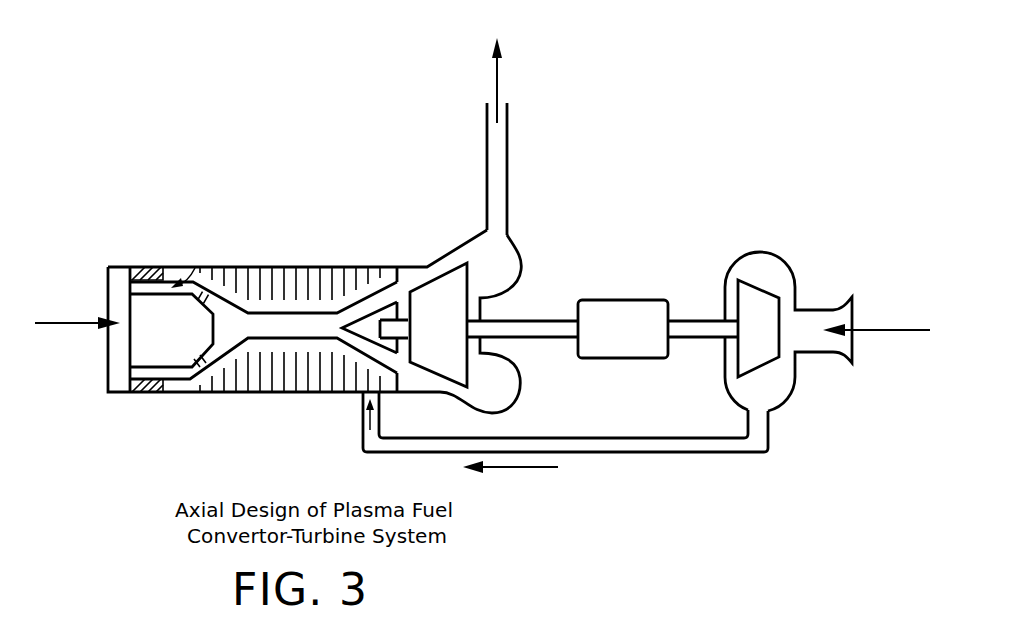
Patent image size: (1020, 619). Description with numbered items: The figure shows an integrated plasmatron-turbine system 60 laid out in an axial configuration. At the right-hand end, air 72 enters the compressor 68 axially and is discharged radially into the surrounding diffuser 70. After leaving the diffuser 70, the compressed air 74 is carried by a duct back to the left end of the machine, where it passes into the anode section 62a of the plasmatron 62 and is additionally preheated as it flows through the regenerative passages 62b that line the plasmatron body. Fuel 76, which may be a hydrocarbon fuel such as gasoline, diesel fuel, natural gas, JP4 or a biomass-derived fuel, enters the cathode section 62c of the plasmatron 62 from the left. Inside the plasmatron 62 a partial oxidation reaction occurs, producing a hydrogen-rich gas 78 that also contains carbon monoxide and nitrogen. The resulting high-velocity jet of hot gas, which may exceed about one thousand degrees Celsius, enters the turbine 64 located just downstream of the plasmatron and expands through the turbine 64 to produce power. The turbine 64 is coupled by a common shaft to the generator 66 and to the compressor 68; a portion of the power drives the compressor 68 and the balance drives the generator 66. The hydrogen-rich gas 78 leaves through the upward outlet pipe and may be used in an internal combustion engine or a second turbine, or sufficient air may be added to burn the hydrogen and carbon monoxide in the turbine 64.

The integrated plasmatron-turbine system 60 is at (348, 40).
The plasmatron 62 is at (300, 250).
The anode section 62a is at (327, 390).
The regenerative passages 62b is at (268, 380).
The cathode section 62c is at (173, 350).
The turbine 64 is at (443, 287).
The generator 66 is at (616, 308).
The compressor 68 is at (752, 283).
The diffuser 70 is at (778, 275).
The air 72 is at (876, 340).
The air 74 is at (565, 444).
The fuel 76 is at (58, 323).
The hydrogen-rich gas 78 is at (495, 76).